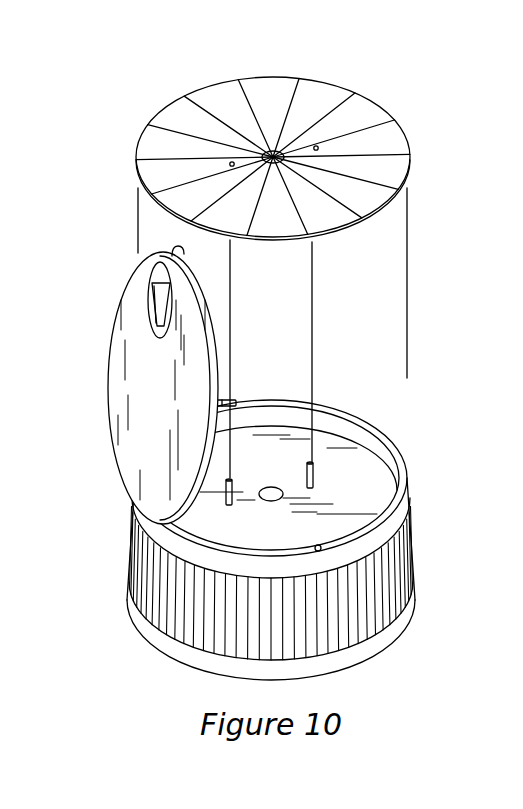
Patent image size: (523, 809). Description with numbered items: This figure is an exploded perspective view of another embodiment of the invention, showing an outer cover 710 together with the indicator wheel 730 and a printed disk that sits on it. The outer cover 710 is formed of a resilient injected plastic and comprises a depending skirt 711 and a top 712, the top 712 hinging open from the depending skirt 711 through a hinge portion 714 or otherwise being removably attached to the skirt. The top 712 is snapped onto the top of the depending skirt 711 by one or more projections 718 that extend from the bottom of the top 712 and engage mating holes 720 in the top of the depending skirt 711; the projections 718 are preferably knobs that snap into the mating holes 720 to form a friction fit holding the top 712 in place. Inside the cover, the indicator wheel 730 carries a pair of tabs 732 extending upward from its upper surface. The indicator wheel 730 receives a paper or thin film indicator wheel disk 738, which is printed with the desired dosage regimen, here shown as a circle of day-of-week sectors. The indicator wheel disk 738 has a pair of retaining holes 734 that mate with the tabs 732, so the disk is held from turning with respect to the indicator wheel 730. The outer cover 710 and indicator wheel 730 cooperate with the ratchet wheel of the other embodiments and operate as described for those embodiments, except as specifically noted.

The outer cover 710 is at (360, 653).
The depending skirt 711 is at (393, 578).
The top 712 is at (128, 367).
The hinge portion 714 is at (145, 543).
The projections 718 is at (224, 402).
The mating holes 720 is at (320, 546).
The indicator wheel 730 is at (358, 467).
The tabs 732 is at (229, 480).
The retaining holes 734 is at (233, 162).
The indicator wheel disk 738 is at (395, 132).